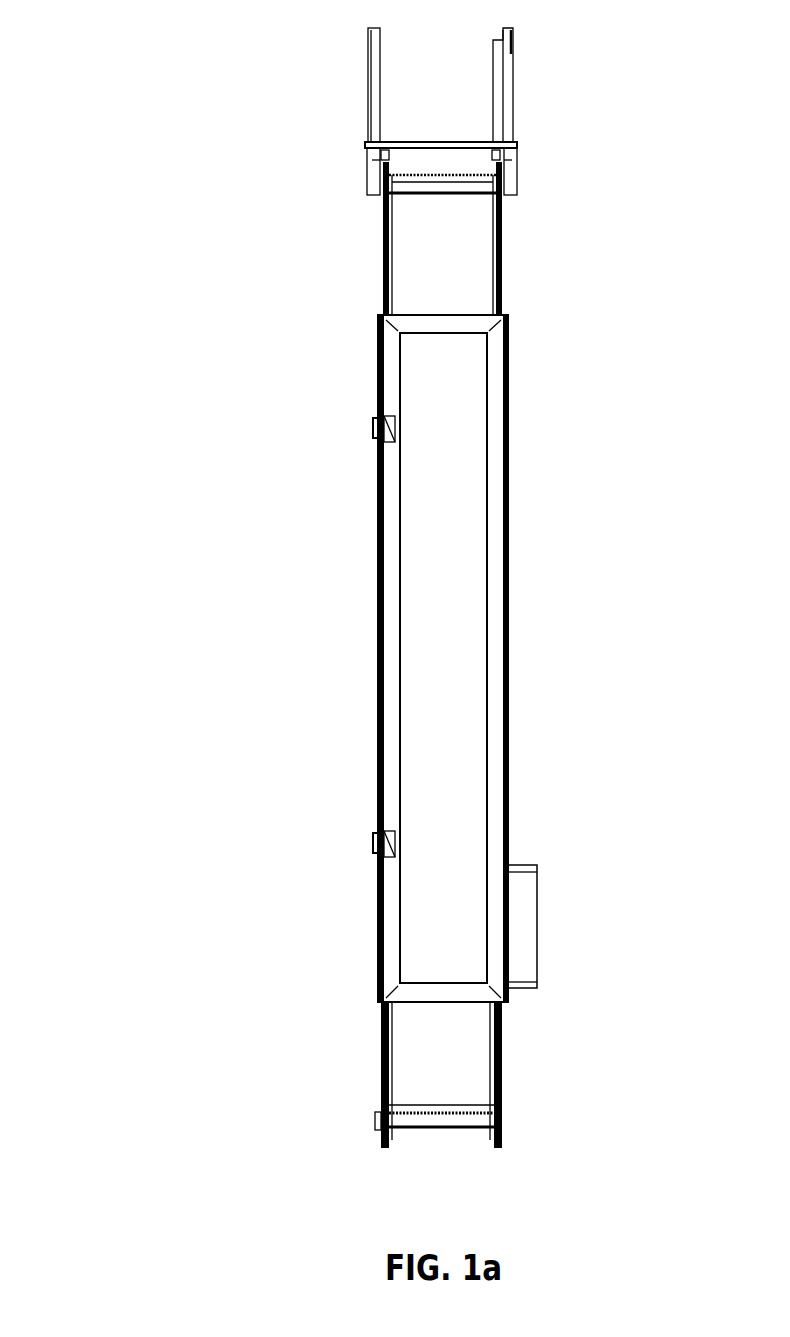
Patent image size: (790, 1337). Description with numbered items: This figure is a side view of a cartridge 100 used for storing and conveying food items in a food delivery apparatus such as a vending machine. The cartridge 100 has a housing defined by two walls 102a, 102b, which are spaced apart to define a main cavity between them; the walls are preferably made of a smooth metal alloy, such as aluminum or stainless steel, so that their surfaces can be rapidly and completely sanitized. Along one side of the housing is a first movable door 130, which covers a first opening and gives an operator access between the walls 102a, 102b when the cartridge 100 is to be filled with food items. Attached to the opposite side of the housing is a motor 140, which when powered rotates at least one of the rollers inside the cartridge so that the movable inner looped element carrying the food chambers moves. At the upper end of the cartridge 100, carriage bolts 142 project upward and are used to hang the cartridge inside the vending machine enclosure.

The cartridge 100 is at (371, 590).
The wall 102a is at (503, 1095).
The wall 102b is at (380, 1055).
The first movable door 130 is at (383, 675).
The motor 140 is at (530, 915).
The carriage bolts 142 is at (510, 107).